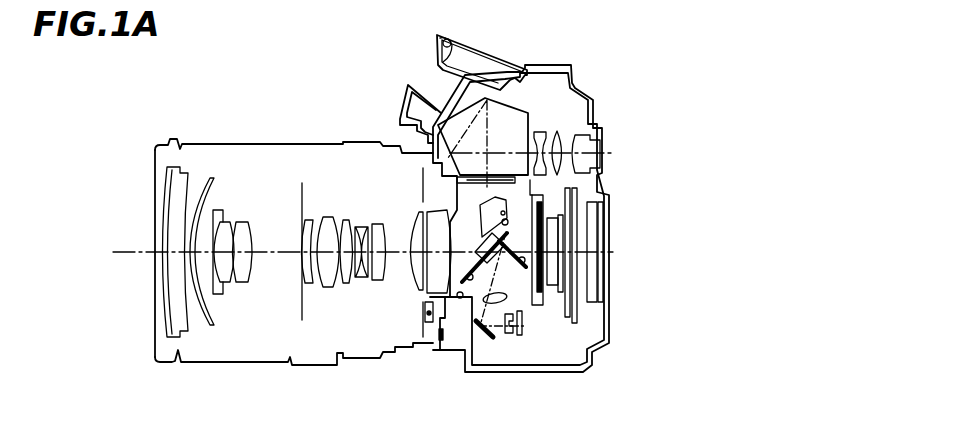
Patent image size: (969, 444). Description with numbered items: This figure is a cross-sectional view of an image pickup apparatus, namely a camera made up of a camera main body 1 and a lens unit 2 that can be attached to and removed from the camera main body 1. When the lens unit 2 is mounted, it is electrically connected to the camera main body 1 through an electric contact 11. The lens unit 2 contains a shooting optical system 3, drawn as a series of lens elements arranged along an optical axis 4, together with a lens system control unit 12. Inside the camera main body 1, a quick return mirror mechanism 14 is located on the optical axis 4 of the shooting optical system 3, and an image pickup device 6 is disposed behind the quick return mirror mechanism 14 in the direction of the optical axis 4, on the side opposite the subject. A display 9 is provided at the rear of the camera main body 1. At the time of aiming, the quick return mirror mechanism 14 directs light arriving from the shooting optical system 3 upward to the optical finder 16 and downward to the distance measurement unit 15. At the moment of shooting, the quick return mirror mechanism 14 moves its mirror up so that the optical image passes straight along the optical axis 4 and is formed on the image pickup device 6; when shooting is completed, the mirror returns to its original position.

The camera main body 1 is at (505, 219).
The lens unit 2 is at (303, 241).
The shooting optical system 3 is at (248, 350).
The optical axis 4 is at (128, 254).
The image pickup device 6 is at (563, 277).
The display 9 is at (607, 282).
The electric contact 11 is at (440, 334).
The lens system control unit 12 is at (417, 316).
The quick return mirror mechanism 14 is at (510, 280).
The distance measurement unit 15 is at (512, 341).
The optical finder 16 is at (566, 120).